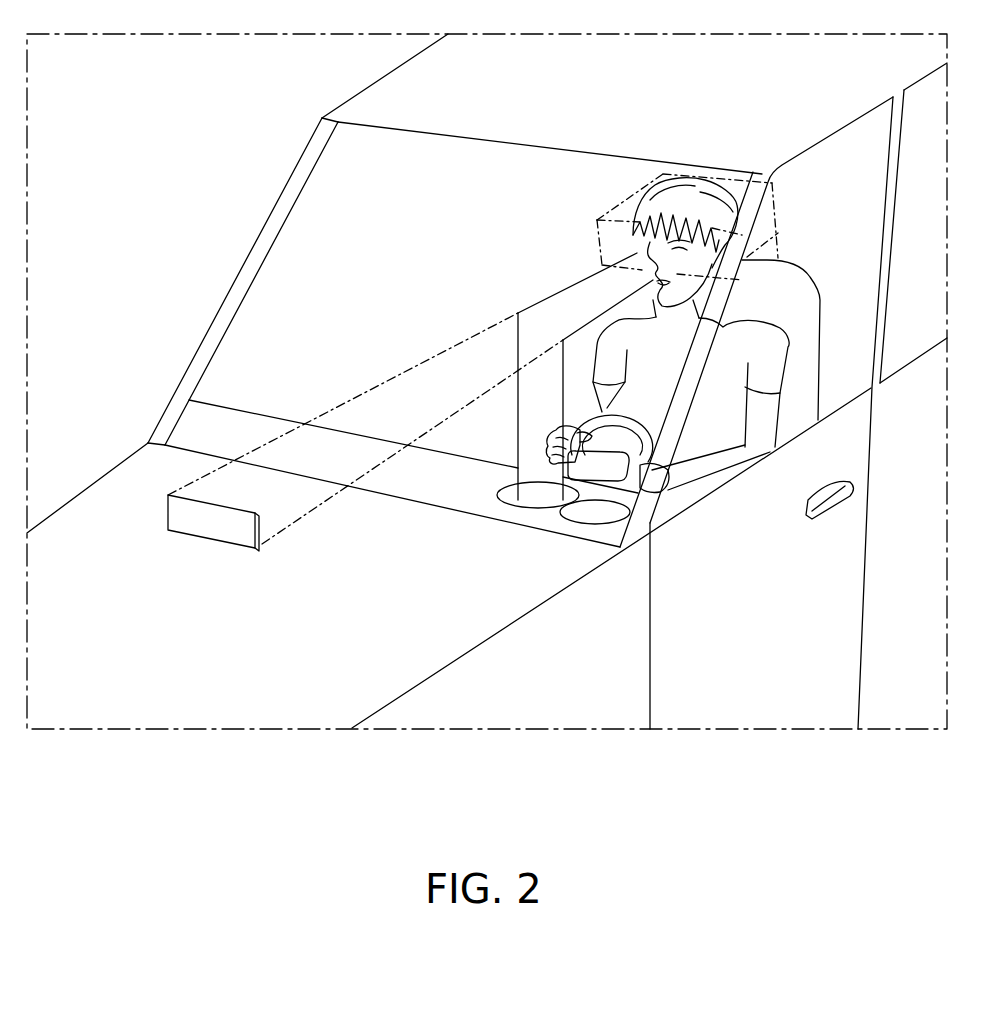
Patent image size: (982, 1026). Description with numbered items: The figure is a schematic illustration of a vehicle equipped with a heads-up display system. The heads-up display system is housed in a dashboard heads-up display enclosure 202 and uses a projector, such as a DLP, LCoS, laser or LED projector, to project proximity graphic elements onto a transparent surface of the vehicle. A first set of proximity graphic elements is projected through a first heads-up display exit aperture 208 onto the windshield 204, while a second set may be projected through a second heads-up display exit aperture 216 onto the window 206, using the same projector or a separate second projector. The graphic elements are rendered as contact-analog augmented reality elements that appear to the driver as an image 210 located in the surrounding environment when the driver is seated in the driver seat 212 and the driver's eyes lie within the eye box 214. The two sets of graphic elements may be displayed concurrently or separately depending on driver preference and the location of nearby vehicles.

The dashboard heads-up display enclosure 202 is at (100, 507).
The windshield 204 is at (268, 252).
The window 206 is at (842, 153).
The first heads-up display exit aperture 208 is at (527, 510).
The image 210 is at (168, 512).
The driver seat 212 is at (823, 307).
The eye box 214 is at (663, 174).
The second heads-up display exit aperture 216 is at (570, 524).